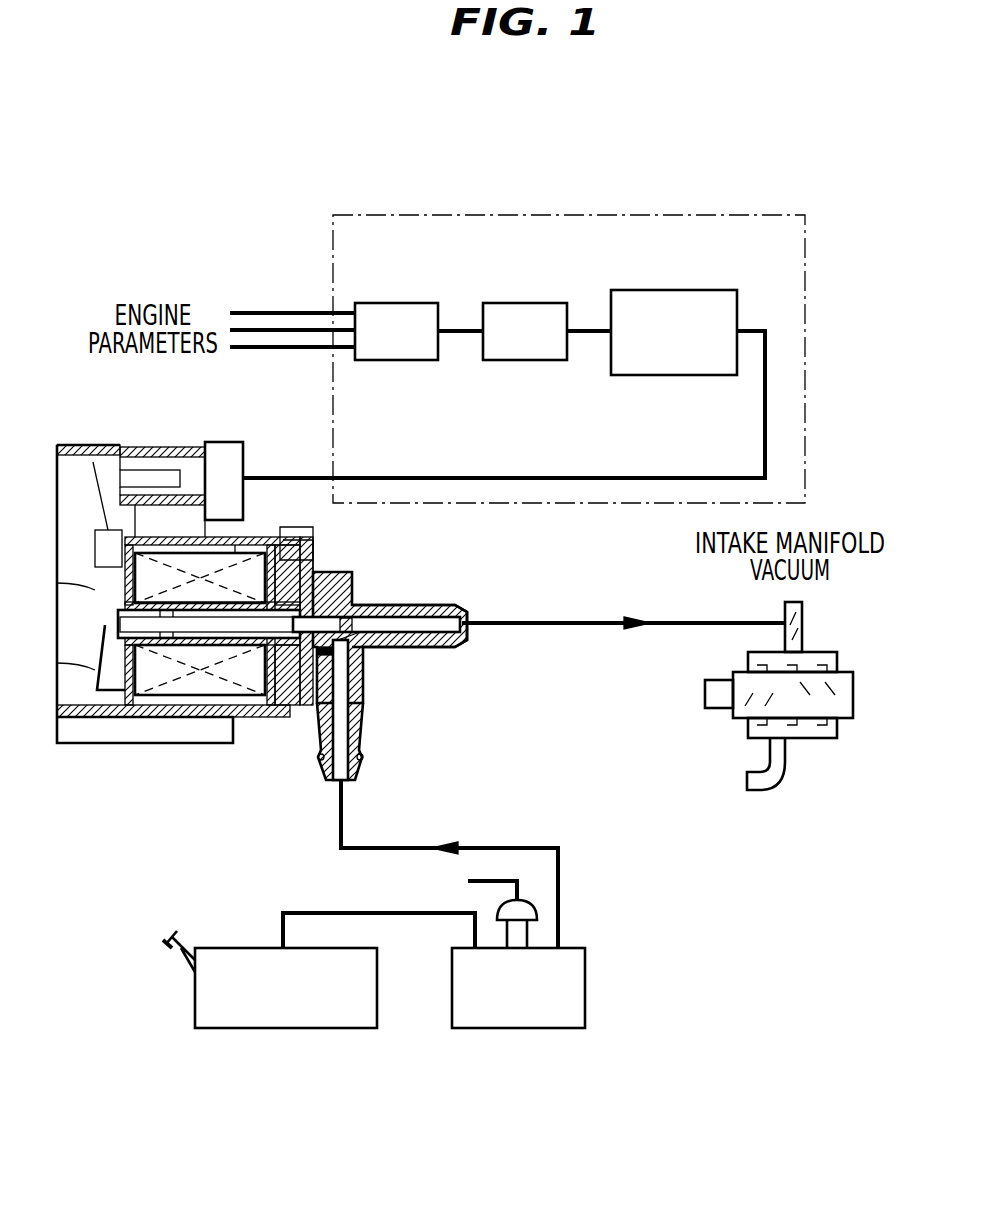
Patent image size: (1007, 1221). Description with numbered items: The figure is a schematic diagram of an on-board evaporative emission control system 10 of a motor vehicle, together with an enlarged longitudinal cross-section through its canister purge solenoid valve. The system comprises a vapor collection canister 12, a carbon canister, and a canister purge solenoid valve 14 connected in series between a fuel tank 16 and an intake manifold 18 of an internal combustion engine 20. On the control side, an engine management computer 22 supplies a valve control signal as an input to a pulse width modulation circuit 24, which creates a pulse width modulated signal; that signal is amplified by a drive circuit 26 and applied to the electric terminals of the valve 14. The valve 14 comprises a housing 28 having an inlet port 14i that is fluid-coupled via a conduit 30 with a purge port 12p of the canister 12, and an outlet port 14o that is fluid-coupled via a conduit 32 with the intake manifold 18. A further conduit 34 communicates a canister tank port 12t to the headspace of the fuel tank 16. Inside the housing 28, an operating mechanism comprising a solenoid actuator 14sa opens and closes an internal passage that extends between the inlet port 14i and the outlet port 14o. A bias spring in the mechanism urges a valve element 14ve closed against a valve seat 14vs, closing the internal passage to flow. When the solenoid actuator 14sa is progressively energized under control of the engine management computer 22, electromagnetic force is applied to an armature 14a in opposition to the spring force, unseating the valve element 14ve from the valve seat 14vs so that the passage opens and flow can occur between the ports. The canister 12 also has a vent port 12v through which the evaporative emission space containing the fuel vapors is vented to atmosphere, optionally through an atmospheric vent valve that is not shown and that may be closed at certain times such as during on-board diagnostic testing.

The evaporative emission control system 10 is at (689, 166).
The vapor collection canister 12 is at (585, 985).
The purge port 12p is at (560, 928).
The canister tank port 12t is at (478, 930).
The vent port 12v is at (560, 895).
The canister purge solenoid valve 14 is at (75, 446).
The armature 14a is at (192, 627).
The inlet port 14i is at (368, 770).
The outlet port 14o is at (468, 600).
The solenoid actuator 14sa is at (235, 552).
The valve element 14ve is at (352, 600).
The valve seat 14vs is at (365, 650).
The fuel tank 16 is at (195, 990).
The intake manifold 18 is at (840, 648).
The internal combustion engine 20 is at (858, 700).
The engine management computer 22 is at (390, 303).
The pulse width modulation circuit 24 is at (523, 303).
The drive circuit 26 is at (668, 290).
The housing 28 is at (350, 575).
The conduit 30 is at (520, 848).
The conduit 32 is at (603, 625).
The conduit 34 is at (283, 930).